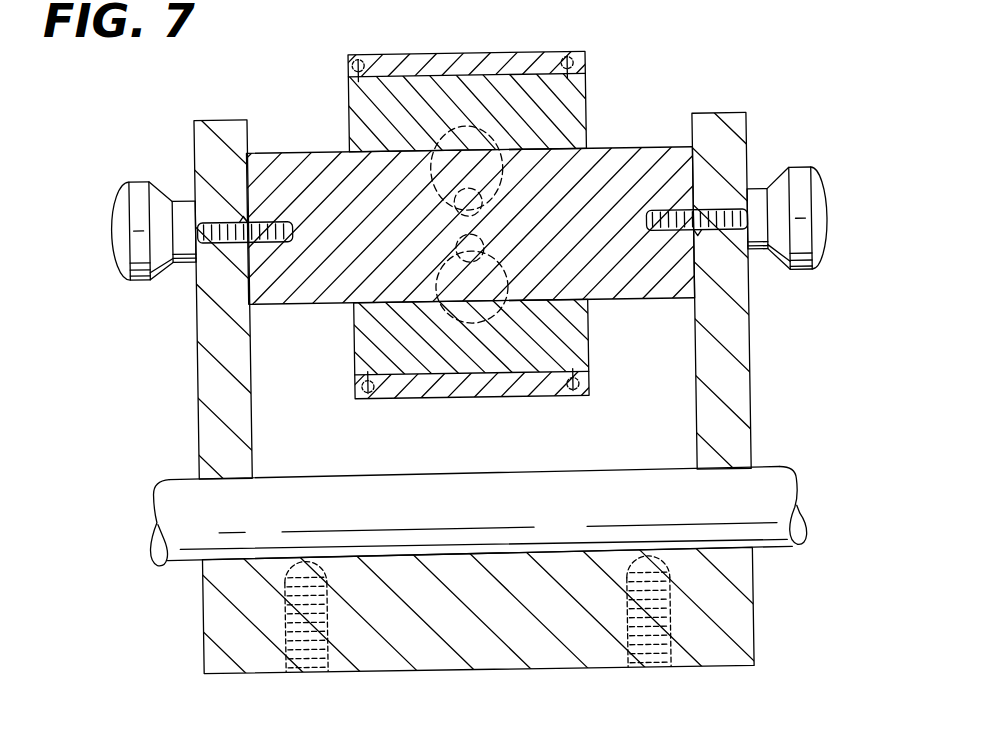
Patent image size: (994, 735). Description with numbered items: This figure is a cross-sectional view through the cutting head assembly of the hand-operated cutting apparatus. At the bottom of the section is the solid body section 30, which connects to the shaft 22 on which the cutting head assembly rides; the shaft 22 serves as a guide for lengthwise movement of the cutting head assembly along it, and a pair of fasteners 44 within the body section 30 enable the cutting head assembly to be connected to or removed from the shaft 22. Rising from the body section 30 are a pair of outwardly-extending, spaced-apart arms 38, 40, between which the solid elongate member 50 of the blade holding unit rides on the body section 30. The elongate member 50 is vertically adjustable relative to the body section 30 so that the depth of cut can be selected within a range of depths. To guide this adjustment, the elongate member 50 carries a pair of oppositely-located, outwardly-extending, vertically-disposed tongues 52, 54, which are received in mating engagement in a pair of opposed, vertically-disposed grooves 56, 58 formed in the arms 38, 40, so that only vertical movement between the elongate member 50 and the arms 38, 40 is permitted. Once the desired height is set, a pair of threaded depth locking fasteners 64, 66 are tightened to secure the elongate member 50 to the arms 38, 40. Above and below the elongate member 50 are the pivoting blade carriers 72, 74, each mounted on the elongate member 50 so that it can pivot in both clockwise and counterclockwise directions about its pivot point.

The shaft 22 is at (776, 496).
The solid body section 30 is at (458, 640).
The arm 38 is at (199, 364).
The arm 40 is at (732, 387).
The fastener 44 is at (308, 672).
The solid elongate member 50 is at (298, 153).
The tongue 52 is at (698, 210).
The tongue 54 is at (245, 215).
The groove 56 is at (699, 243).
The groove 58 is at (249, 240).
The threaded depth locking fastener 64 is at (818, 212).
The threaded depth locking fastener 66 is at (120, 232).
The pivoting blade carrier 72 is at (577, 101).
The pivoting blade carrier 74 is at (584, 323).